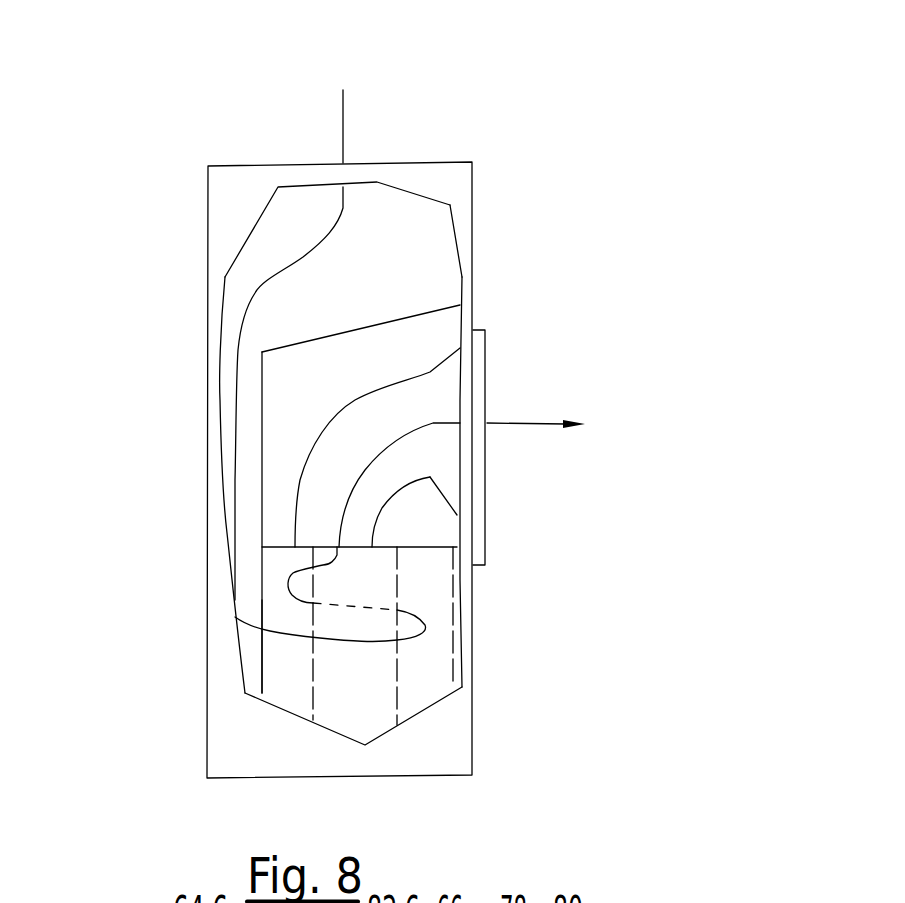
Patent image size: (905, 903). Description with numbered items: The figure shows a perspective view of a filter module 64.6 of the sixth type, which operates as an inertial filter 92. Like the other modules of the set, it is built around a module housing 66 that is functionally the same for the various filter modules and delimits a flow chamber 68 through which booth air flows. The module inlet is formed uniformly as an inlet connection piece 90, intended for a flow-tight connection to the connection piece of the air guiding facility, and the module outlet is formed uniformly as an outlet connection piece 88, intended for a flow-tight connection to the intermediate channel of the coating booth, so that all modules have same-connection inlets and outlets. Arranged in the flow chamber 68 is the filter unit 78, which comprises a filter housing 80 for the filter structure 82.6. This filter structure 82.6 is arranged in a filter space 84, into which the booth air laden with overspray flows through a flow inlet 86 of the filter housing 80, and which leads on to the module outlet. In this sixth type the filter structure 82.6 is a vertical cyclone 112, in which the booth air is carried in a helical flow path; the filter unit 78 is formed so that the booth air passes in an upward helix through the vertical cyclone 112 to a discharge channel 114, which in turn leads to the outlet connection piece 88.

The inlet connection piece 90 is at (229, 153).
The filter module 64.6 is at (432, 180).
The module housing 66 is at (462, 227).
The flow chamber 68 is at (257, 452).
The filter unit 78 is at (355, 310).
The filter housing 80 is at (407, 320).
The outlet connection piece 88 is at (489, 344).
The discharge channel 114 is at (432, 398).
The inertial filter 92 is at (168, 513).
The flow inlet 86 is at (260, 595).
The vertical cyclone 112 is at (283, 663).
The filter structure 82.6 is at (456, 602).
The filter space 84 is at (380, 688).